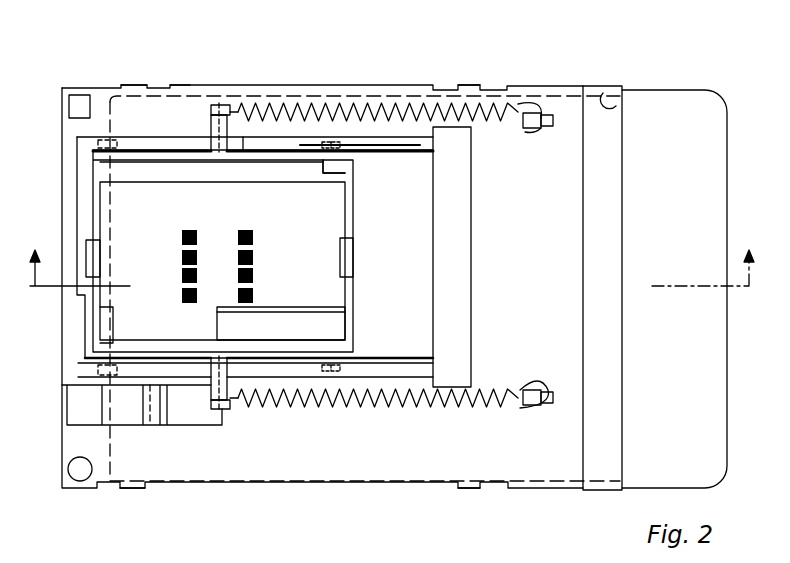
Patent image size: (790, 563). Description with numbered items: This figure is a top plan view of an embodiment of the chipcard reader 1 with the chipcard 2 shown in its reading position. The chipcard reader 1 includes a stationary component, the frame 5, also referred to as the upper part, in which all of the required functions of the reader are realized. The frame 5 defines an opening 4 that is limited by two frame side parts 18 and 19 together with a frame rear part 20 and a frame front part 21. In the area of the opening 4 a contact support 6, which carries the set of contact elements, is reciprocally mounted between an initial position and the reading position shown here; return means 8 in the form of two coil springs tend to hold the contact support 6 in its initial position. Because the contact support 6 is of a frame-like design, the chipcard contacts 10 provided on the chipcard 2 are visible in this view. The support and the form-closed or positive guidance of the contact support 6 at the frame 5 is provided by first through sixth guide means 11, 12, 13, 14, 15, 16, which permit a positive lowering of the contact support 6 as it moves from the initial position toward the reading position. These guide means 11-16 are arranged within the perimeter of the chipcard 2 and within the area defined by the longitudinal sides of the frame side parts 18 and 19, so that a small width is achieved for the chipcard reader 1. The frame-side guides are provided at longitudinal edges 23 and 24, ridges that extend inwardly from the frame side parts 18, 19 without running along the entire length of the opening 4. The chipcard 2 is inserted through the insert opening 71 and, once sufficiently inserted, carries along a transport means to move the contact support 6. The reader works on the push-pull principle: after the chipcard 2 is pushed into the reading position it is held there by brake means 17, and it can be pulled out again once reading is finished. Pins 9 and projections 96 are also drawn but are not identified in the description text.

The chipcard reader 1 is at (540, 562).
The chipcard 2 is at (680, 108).
The opening 4 is at (498, 225).
The frame 5 is at (200, 462).
The contact support 6 is at (358, 233).
The return means 8 is at (491, 118).
The guide pin 9 is at (223, 107).
The chipcard contacts 10 is at (191, 229).
The first guide means 11 is at (116, 166).
The second guide means 12 is at (324, 165).
The third guide means 13 is at (121, 346).
The fourth guide means 14 is at (323, 343).
The fifth guide means 15 is at (202, 122).
The sixth guide means 16 is at (205, 386).
The brake means 17 is at (127, 432).
The frame side part 18 is at (165, 120).
The frame side part 19 is at (330, 458).
The frame rear part 20 is at (62, 191).
The frame front part 21 is at (562, 240).
The longitudinal edge 23 is at (413, 143).
The longitudinal edge 24 is at (410, 368).
The insert opening 71 is at (628, 98).
The projections 96 is at (128, 88).